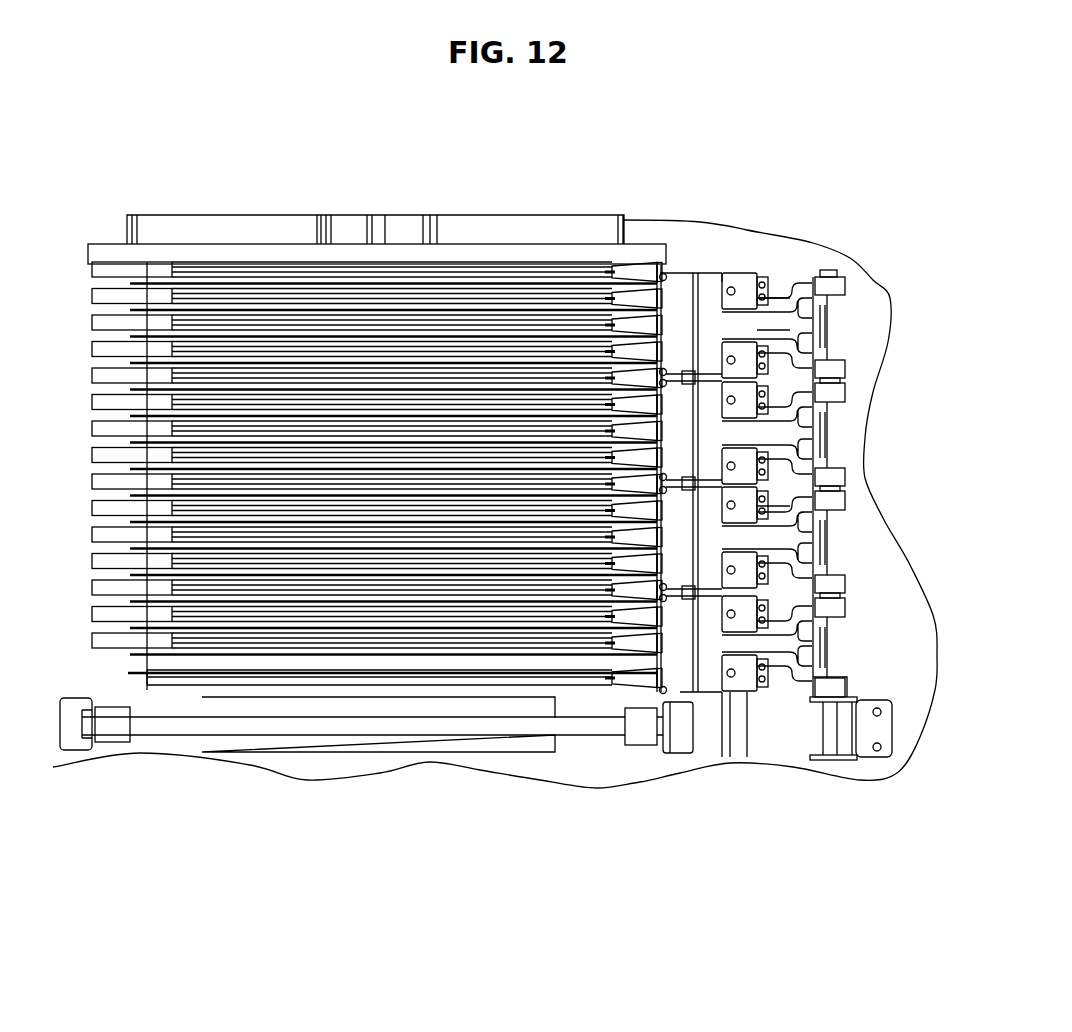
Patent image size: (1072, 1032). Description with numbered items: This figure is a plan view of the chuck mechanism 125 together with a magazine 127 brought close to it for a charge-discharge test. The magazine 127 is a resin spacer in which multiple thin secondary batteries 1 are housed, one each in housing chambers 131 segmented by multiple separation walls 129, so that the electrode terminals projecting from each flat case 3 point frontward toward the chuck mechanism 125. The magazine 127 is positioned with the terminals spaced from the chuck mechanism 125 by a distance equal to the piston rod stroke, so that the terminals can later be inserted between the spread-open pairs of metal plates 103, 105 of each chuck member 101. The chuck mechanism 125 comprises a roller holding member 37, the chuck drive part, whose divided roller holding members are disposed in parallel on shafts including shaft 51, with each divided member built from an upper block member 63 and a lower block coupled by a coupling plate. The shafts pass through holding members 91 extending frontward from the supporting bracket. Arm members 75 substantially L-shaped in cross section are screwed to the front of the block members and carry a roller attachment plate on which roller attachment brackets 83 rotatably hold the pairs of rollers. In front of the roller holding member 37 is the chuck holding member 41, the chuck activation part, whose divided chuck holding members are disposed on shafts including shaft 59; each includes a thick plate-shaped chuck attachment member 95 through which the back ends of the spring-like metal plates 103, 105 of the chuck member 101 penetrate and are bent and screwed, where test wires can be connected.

The thin secondary battery 1 is at (540, 300).
The flat case 3 is at (604, 280).
The roller holding member 37 is at (842, 267).
The chuck holding member 41 is at (740, 272).
The shaft 51 is at (833, 742).
The shaft 59 is at (742, 747).
The upper block member 63 is at (830, 353).
The arm member 75 is at (807, 323).
The roller attachment bracket 83 is at (680, 283).
The holding member 91 is at (860, 686).
The chuck attachment member 95 is at (750, 505).
The chuck member 101 is at (637, 265).
The metal plate 103 is at (672, 700).
The metal plate 105 is at (600, 710).
The chuck mechanism 125 is at (782, 283).
The magazine 127 is at (267, 248).
The separation wall 129 is at (373, 268).
The housing chamber 131 is at (470, 300).